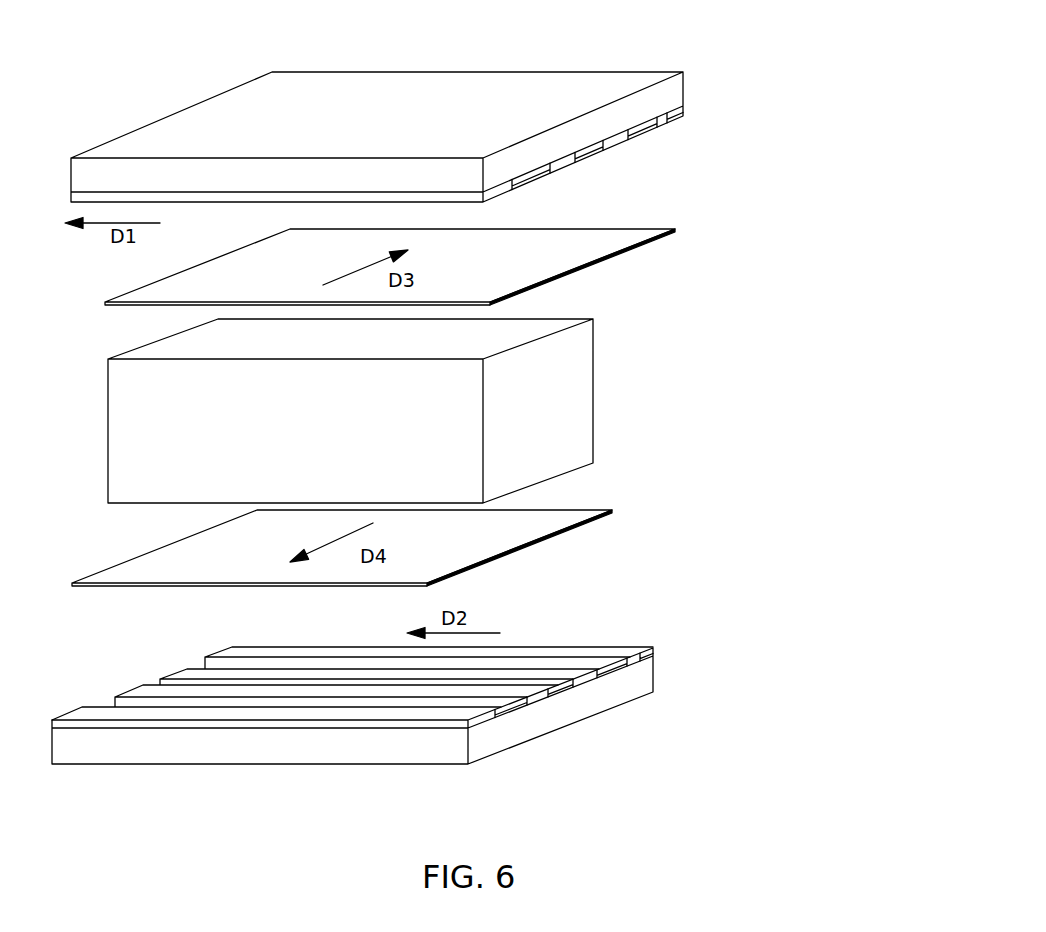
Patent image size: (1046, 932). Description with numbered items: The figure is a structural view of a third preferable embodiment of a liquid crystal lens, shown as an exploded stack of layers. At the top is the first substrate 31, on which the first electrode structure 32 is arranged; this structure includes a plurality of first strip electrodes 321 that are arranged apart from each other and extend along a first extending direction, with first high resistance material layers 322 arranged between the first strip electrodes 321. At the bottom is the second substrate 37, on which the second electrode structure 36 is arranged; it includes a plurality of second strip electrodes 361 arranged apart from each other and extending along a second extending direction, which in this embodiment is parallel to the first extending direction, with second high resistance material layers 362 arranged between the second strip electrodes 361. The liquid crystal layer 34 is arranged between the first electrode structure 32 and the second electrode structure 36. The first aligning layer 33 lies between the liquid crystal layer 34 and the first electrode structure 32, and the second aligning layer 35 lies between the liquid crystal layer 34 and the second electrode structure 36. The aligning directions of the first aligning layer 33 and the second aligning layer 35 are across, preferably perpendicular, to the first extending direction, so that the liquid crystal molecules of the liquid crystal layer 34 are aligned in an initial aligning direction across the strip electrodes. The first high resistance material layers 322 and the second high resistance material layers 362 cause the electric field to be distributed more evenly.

The first substrate 31 is at (660, 95).
The first electrode structure 32 is at (640, 150).
The first strip electrodes 321 is at (670, 121).
The first high resistance material layers 322 is at (647, 132).
The first aligning layer 33 is at (665, 235).
The liquid crystal layer 34 is at (586, 371).
The second aligning layer 35 is at (595, 508).
The second electrode structure 36 is at (684, 650).
The second strip electrodes 361 is at (538, 695).
The second high resistance material layers 362 is at (600, 672).
The second substrate 37 is at (482, 740).